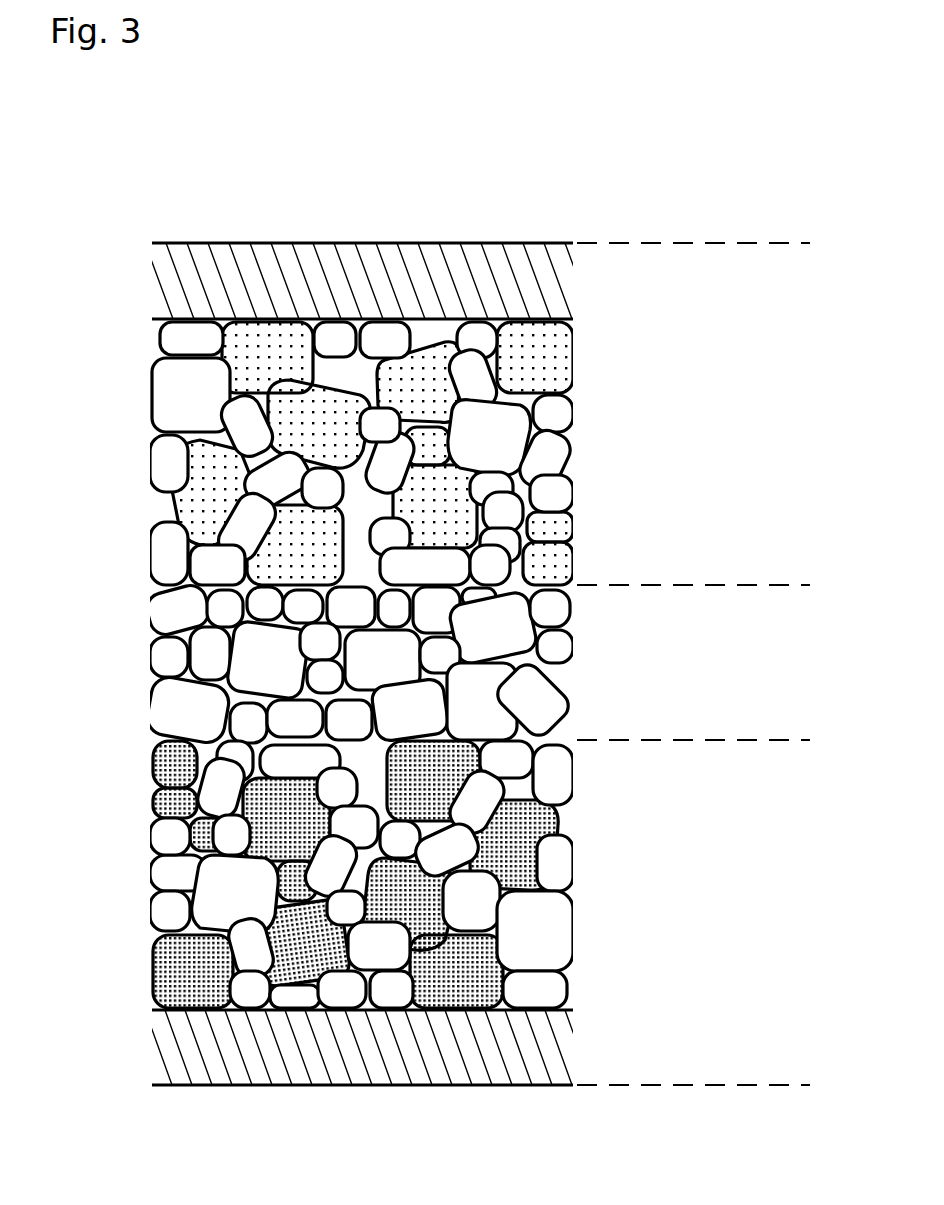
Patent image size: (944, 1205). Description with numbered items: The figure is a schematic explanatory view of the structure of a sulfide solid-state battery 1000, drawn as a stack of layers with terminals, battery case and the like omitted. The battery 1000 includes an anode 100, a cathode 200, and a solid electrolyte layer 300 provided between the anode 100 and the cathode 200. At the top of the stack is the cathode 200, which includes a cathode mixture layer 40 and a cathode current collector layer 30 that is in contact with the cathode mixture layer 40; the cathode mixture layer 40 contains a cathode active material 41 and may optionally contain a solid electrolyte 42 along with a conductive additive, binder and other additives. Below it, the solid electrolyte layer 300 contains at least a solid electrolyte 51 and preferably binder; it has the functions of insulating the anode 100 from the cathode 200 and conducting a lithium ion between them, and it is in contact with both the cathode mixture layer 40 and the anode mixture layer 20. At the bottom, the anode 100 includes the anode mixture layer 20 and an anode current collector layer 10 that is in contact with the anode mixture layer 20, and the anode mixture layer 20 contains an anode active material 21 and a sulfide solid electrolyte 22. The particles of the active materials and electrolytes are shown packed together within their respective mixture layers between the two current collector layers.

The sulfide solid-state battery 1000 is at (394, 169).
The cathode current collector layer 30 is at (552, 280).
The cathode mixture layer 40 is at (380, 453).
The cathode active material 41 is at (240, 340).
The solid electrolyte 42 is at (172, 397).
The cathode 200 is at (750, 243).
The solid electrolyte layer 300 is at (452, 663).
The solid electrolyte 51 is at (170, 618).
The anode mixture layer 20 is at (380, 874).
The anode active material 21 is at (168, 770).
The sulfide solid electrolyte 22 is at (170, 835).
The anode current collector layer 10 is at (552, 1045).
The anode 100 is at (750, 740).